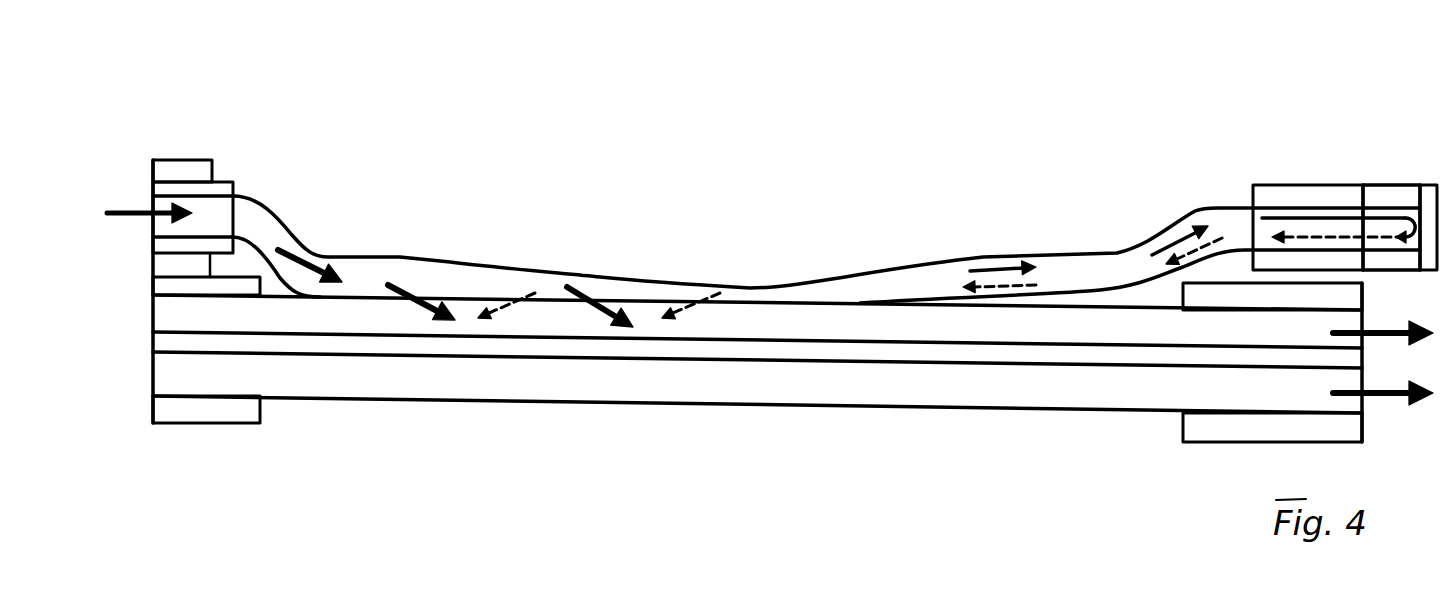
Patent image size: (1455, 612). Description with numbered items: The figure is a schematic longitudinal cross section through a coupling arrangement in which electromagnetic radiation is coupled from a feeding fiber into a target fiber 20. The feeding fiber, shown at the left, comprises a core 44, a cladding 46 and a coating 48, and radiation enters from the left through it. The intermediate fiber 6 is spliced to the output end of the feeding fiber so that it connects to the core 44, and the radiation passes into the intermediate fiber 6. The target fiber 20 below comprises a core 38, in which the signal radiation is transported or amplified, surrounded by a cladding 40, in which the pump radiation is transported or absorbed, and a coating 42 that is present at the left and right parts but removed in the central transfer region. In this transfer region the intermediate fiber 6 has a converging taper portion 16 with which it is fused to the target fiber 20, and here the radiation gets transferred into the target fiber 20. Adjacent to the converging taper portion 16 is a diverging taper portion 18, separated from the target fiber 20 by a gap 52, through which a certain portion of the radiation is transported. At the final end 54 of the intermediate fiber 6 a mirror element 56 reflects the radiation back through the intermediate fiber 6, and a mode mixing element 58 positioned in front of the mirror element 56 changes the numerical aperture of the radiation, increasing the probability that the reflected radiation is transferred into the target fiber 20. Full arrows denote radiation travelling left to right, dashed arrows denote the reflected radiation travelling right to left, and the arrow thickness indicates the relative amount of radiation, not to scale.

The intermediate fiber 6 is at (826, 259).
The converging taper portion 16 is at (515, 262).
The diverging taper portion 18 is at (850, 270).
The target fiber 20 is at (150, 275).
The core 38 is at (470, 347).
The cladding 40 is at (350, 385).
The coating 42 is at (213, 415).
The core 44 is at (213, 222).
The cladding 46 is at (215, 188).
The coating 48 is at (184, 170).
The gap 52 is at (995, 305).
The final end 54 is at (1407, 158).
The mirror element 56 is at (1427, 185).
The mode mixing element 58 is at (1375, 197).